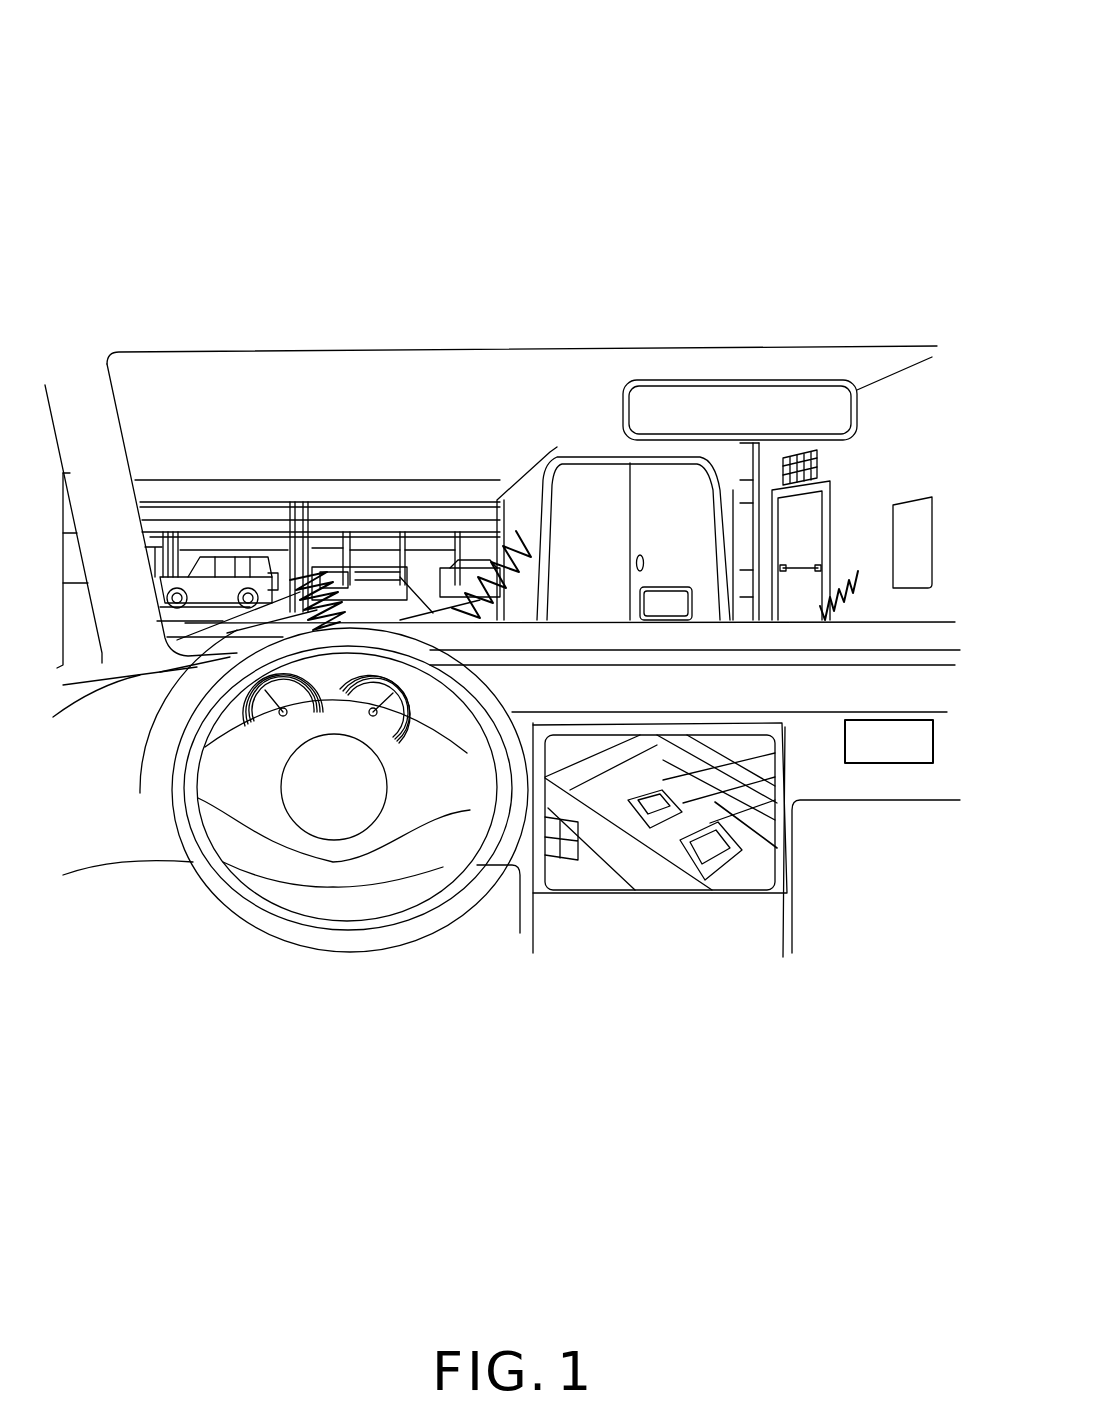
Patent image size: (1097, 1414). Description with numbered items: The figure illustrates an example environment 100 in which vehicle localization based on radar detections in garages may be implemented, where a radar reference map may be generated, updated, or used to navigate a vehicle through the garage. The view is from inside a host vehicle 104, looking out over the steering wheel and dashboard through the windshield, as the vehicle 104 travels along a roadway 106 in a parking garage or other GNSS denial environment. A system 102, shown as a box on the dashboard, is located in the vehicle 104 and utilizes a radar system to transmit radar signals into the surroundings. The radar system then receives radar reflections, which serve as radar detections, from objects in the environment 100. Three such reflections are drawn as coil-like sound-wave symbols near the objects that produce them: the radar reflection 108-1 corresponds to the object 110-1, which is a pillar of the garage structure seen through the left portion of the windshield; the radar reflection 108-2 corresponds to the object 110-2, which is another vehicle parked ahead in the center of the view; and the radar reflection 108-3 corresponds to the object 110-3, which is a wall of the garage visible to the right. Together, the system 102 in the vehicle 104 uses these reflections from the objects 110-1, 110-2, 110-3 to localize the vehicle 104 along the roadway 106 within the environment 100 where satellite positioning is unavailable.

The environment 100 is at (855, 62).
The system 102 is at (892, 763).
The vehicle 104 is at (170, 905).
The roadway 106 is at (400, 592).
The radar reflection 108-1 is at (320, 577).
The radar reflection 108-2 is at (520, 545).
The radar reflection 108-3 is at (843, 577).
The object 110-1 is at (300, 540).
The object 110-2 is at (560, 453).
The object 110-3 is at (857, 480).